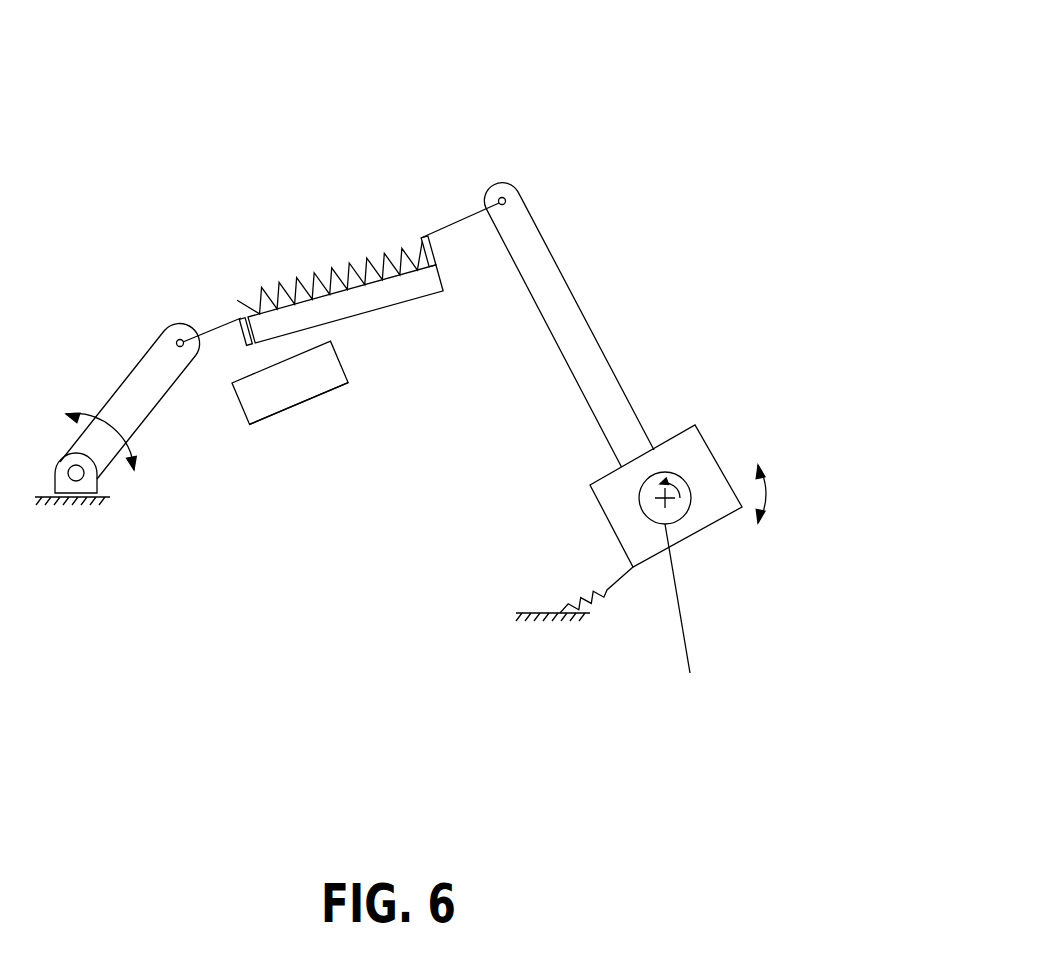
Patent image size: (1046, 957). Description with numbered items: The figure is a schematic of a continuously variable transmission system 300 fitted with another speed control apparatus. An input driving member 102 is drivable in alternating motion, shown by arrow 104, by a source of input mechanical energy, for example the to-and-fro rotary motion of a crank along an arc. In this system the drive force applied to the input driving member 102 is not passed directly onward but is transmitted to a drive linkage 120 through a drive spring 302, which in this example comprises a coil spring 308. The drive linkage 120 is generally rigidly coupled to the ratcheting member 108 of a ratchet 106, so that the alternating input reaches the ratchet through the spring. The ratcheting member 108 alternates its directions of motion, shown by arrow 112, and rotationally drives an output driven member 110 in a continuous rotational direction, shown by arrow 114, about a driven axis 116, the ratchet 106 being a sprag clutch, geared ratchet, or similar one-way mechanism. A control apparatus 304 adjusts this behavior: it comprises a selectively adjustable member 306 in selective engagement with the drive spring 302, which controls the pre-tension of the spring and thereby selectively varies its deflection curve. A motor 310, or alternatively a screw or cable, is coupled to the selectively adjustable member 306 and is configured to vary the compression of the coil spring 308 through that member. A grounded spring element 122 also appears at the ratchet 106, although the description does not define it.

The continuously variable transmission system 300 is at (594, 50).
The input driving member 102 is at (137, 362).
The arrow 104 is at (131, 450).
The drive spring 302 is at (341, 351).
The coil spring 308 is at (282, 284).
The selectively adjustable member 306 is at (409, 324).
The control apparatus 304 is at (352, 357).
The motor 310 is at (319, 410).
The drive linkage 120 is at (588, 317).
The ratchet 106 is at (684, 529).
The ratcheting member 108 is at (648, 494).
The arrow 114 is at (665, 494).
The driven axis 116 is at (660, 503).
The arrow 112 is at (765, 500).
The output driven member 110 is at (690, 673).
The return spring 122 is at (610, 590).